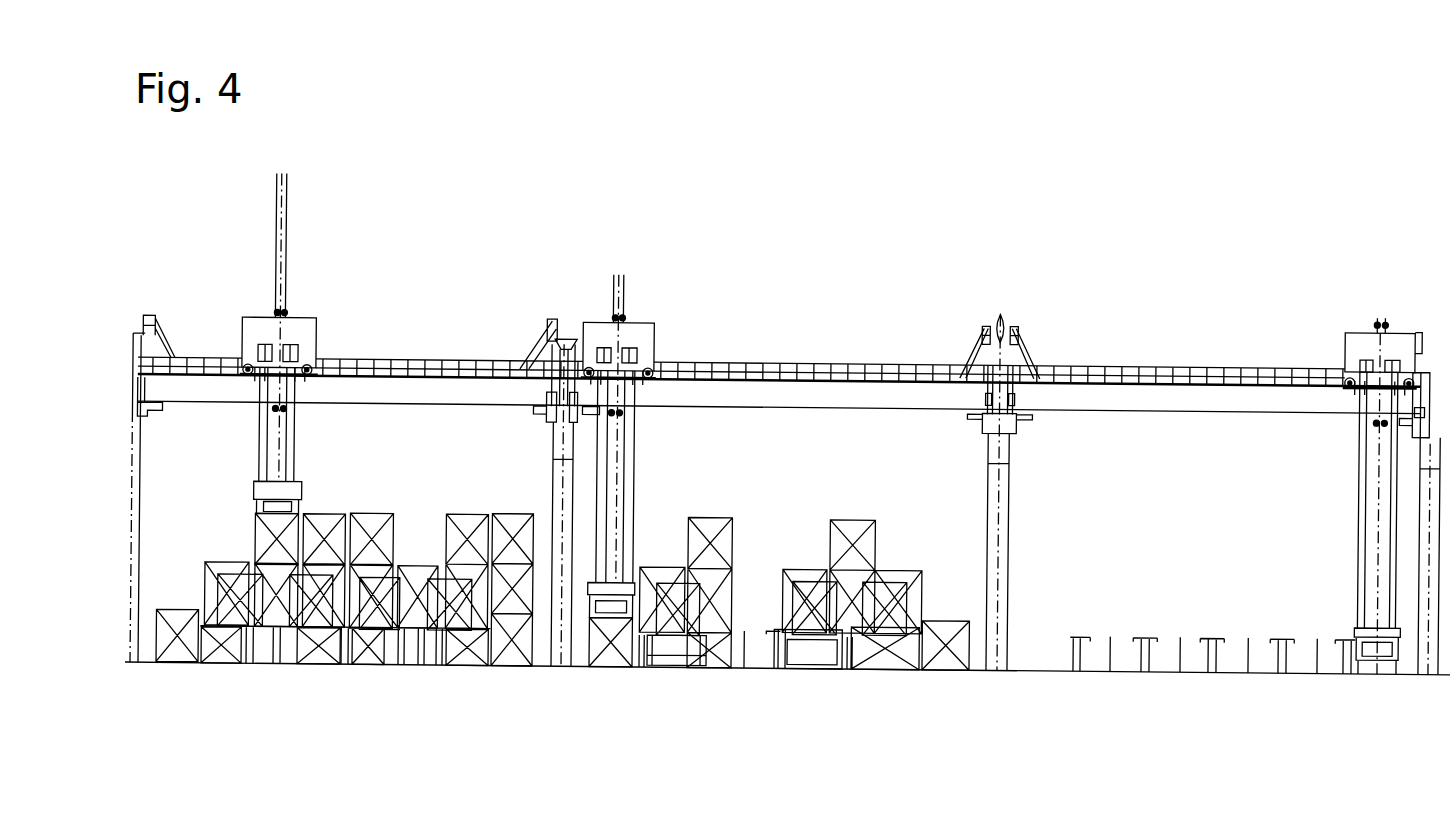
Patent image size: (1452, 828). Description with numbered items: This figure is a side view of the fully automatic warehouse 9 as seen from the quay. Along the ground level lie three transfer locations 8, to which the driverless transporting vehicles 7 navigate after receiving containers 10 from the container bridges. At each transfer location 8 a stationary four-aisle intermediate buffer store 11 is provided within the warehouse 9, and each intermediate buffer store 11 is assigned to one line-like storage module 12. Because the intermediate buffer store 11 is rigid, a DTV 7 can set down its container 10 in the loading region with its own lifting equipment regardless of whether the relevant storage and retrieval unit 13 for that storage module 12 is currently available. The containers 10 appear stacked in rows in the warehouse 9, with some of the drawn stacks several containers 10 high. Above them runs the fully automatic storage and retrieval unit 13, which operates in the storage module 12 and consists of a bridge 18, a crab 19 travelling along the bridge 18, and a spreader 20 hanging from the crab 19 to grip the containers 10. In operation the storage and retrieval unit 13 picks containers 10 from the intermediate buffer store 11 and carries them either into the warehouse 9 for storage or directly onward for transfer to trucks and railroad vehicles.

The driverless transporting vehicle 7 is at (805, 645).
The transfer location 8 is at (288, 677).
The warehouse 9 is at (423, 534).
The container 10 is at (889, 620).
The intermediate buffer store 11 is at (1218, 666).
The storage module 12 is at (1205, 561).
The storage and retrieval unit 13 is at (801, 341).
The bridge 18 is at (719, 384).
The crab 19 is at (639, 330).
The spreader 20 is at (255, 489).